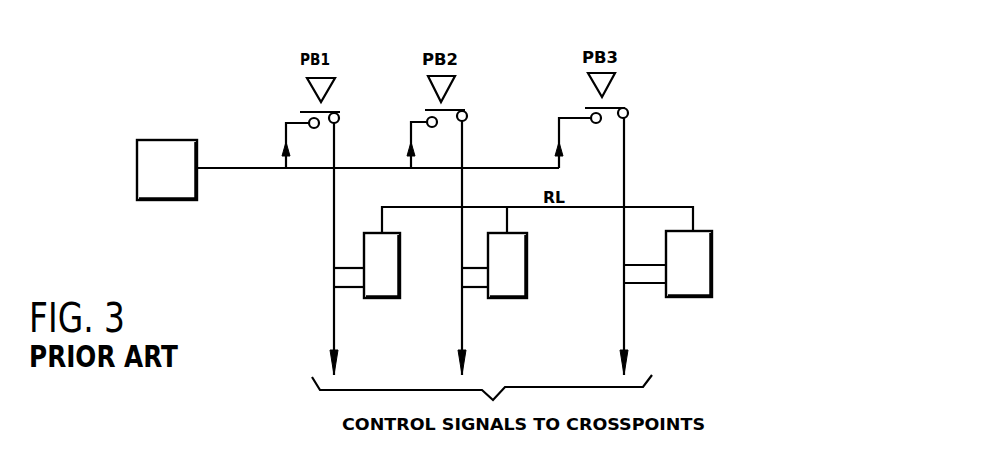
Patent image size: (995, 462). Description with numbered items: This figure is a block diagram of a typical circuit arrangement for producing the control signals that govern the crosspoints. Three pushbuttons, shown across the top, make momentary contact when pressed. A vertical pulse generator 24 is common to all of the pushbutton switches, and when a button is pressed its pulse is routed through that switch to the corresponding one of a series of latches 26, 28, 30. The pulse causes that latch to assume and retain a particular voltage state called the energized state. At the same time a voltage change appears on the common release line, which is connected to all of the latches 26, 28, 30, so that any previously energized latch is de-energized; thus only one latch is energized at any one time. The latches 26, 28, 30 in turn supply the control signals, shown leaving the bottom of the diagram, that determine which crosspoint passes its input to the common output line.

The vertical pulse generator 24 is at (157, 144).
The latch 26 is at (380, 299).
The latch 28 is at (511, 299).
The latch 30 is at (695, 298).